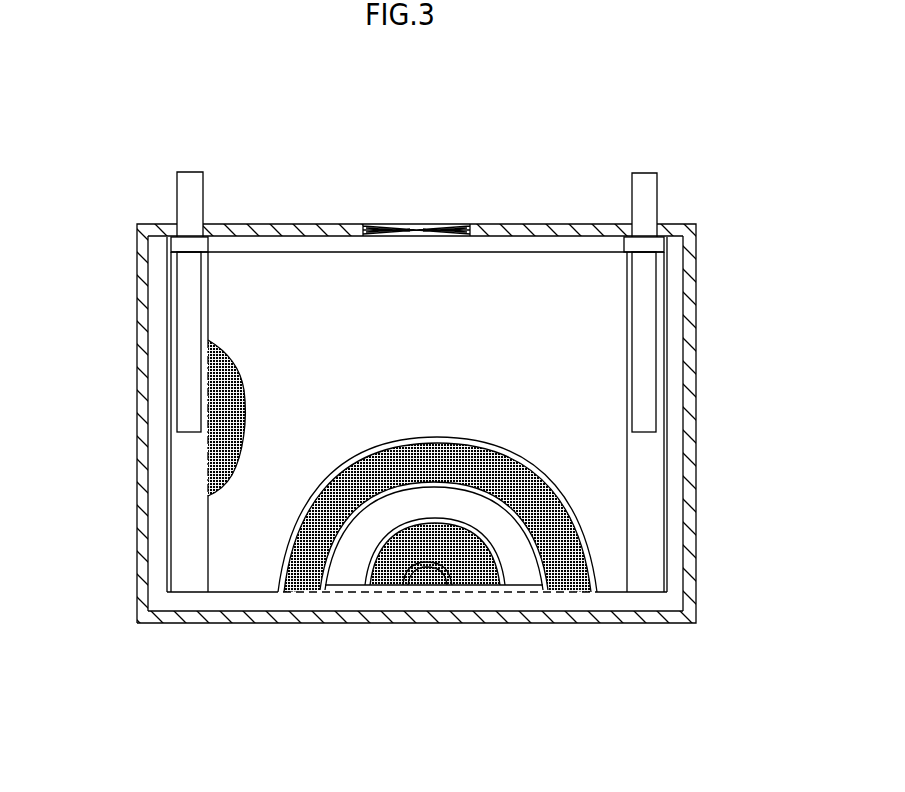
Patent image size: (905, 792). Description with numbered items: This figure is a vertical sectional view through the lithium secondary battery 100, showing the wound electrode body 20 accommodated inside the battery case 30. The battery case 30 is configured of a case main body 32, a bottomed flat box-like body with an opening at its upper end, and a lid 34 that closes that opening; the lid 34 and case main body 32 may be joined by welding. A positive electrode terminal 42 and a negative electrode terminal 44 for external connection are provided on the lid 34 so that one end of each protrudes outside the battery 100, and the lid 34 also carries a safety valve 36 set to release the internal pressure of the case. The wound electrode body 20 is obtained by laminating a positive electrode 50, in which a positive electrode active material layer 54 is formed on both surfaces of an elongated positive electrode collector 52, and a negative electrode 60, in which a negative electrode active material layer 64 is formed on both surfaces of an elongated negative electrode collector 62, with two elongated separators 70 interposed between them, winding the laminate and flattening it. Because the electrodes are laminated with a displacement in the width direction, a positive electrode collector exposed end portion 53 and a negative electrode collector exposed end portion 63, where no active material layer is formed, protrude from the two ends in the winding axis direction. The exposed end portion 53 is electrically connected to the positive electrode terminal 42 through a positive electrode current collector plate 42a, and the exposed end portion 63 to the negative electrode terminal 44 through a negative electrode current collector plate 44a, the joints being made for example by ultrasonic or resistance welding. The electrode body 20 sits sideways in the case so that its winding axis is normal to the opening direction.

The lithium secondary battery 100 is at (698, 188).
The wound electrode body 20 is at (302, 280).
The battery case 30 is at (463, 376).
The case main body 32 is at (697, 597).
The lid 34 is at (592, 222).
The safety valve 36 is at (418, 222).
The positive electrode terminal 42 is at (188, 172).
The positive electrode current collector plate 42a is at (192, 322).
The negative electrode terminal 44 is at (645, 173).
The negative electrode current collector plate 44a is at (645, 285).
The positive electrode 50 is at (303, 575).
The positive electrode collector 52 is at (167, 493).
The positive electrode collector exposed end portion 53 is at (183, 567).
The positive electrode active material layer 54 is at (226, 388).
The negative electrode 60 is at (384, 572).
The negative electrode collector 62 is at (668, 445).
The negative electrode collector exposed end portion 63 is at (650, 490).
The negative electrode active material layer 64 is at (430, 632).
The separator 70 is at (243, 523).